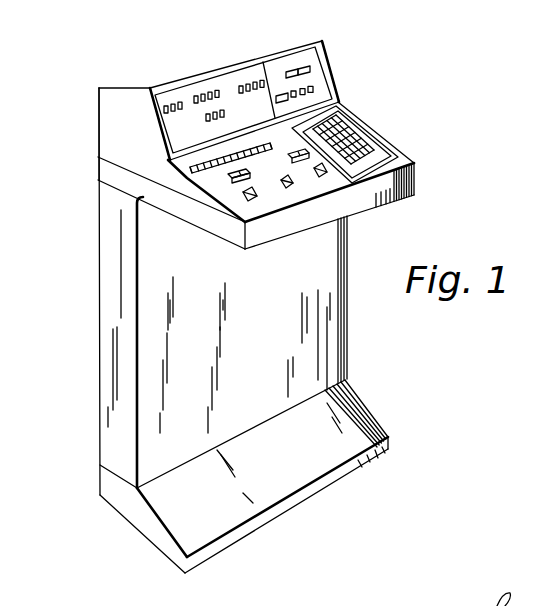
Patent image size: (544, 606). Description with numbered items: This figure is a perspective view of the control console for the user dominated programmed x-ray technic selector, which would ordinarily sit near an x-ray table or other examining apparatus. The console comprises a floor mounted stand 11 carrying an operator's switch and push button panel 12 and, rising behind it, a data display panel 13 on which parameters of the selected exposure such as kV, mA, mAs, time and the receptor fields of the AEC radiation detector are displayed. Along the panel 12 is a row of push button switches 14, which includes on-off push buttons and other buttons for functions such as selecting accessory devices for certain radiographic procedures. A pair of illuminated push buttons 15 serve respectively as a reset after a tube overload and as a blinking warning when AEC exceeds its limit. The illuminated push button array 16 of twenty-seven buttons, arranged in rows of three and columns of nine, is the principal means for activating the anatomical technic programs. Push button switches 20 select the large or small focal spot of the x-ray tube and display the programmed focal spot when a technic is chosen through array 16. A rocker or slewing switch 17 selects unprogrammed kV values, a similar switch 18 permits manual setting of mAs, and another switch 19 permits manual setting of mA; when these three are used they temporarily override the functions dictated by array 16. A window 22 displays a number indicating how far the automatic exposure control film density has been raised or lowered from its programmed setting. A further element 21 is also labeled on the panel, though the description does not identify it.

The floor mounted stand 11 is at (275, 323).
The operator's switch and push button panel 12 is at (379, 156).
The data display panel 13 is at (217, 80).
The row of push button switches 14 is at (135, 165).
The pair of illuminated push buttons 15 is at (227, 179).
The push button array 16 is at (390, 177).
The rocker or slewing switch 17 is at (243, 198).
The switch 18 is at (285, 189).
The switch 19 is at (330, 174).
The push button switches 20 is at (298, 165).
The keyboard 21 is at (356, 133).
The window 22 is at (373, 146).